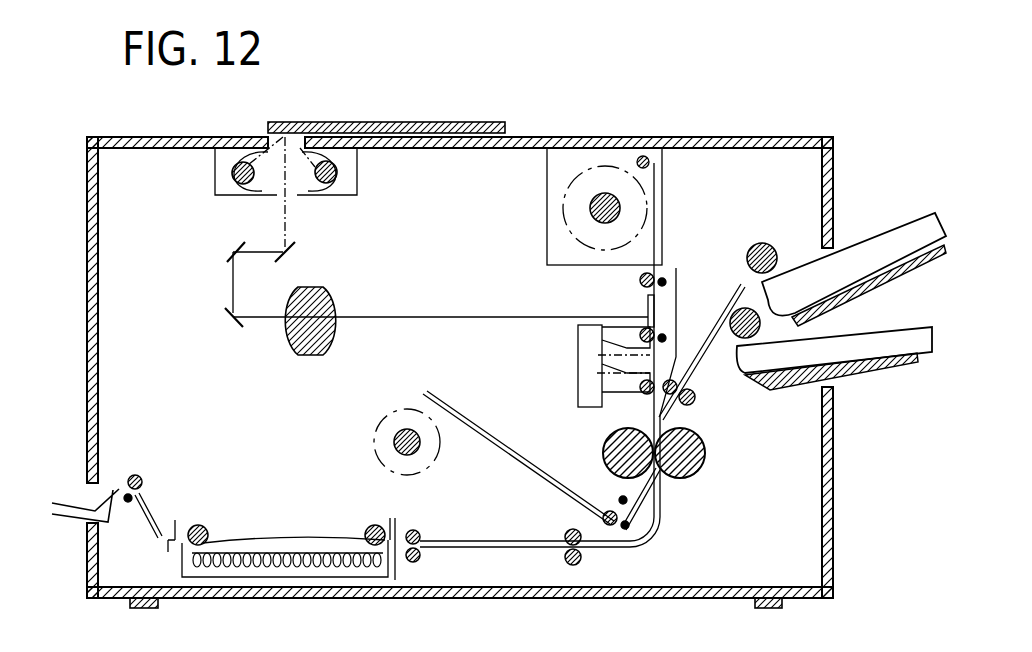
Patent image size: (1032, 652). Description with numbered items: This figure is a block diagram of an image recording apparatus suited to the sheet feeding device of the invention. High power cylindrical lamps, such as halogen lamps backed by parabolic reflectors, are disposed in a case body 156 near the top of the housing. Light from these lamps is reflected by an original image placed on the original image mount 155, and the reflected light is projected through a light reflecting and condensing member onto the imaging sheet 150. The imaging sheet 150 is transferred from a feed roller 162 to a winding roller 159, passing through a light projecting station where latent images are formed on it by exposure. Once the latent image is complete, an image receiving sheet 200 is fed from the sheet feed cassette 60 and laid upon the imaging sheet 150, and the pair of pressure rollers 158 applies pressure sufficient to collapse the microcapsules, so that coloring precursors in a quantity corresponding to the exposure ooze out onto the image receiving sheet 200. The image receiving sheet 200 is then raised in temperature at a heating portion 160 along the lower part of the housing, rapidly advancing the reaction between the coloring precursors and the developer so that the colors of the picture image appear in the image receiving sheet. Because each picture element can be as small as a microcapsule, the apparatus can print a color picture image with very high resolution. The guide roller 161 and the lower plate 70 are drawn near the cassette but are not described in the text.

The original image mount 155 is at (446, 120).
The case body 156 is at (333, 201).
The imaging sheet 150 is at (562, 217).
The feed roller 162 is at (620, 202).
The guide roller 161 is at (777, 243).
The image receiving sheet 200 is at (742, 282).
The sheet feed cassette 60 is at (903, 217).
The lower guide plate 70 is at (903, 327).
The winding roller 159 is at (392, 442).
The pressure rollers 158 is at (612, 448).
The heating portion 160 is at (263, 529).